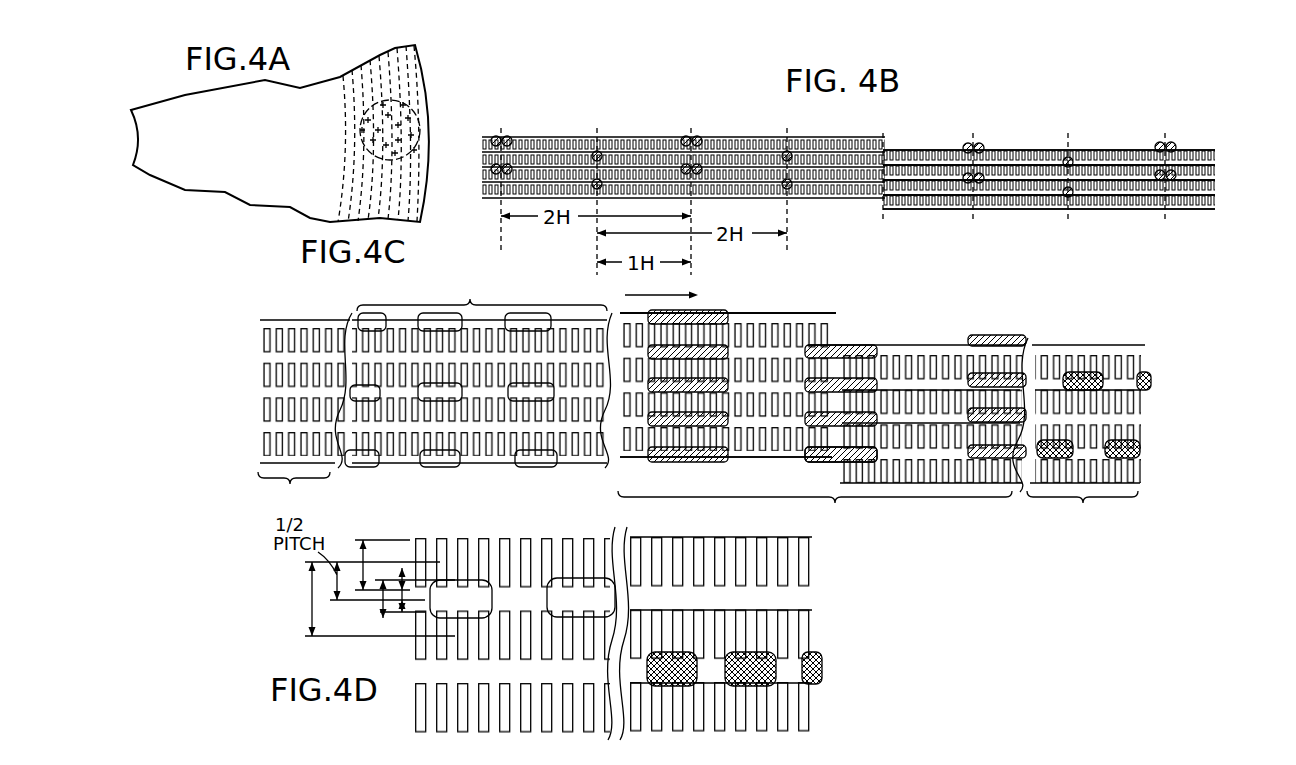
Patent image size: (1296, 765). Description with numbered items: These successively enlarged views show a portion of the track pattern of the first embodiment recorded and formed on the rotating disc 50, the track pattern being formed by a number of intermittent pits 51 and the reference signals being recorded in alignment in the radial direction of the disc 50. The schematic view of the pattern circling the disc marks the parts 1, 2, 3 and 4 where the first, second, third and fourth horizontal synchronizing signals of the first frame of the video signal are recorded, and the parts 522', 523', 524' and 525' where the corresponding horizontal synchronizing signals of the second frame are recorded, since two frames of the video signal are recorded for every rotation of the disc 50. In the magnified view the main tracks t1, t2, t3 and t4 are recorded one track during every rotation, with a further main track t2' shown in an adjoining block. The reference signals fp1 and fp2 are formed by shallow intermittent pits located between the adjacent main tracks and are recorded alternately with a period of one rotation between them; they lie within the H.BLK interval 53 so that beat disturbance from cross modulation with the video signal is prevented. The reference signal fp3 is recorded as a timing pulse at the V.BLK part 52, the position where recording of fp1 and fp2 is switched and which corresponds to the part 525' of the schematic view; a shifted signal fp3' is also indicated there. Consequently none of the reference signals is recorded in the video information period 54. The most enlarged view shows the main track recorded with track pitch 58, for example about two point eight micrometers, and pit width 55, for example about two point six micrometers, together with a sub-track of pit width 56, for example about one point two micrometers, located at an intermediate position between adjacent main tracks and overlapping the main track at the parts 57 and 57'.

In FIG. 4A, the disc 50 is at (424, 72).
In FIG. 4C, the disc 50 is at (1112, 342).
In FIG. 4B, the track 51 is at (834, 200).
In FIG. 4C, the track 51 is at (812, 322).
In FIG. 4D, the track 51 is at (565, 541).
In FIG. 4C, the V.BLK part 52 is at (815, 512).
In FIG. 4C, the H.BLK interval 53 is at (747, 403).
In FIG. 4C, the video information period 54 is at (294, 489).
In FIG. 4D, the pit width 55 is at (363, 565).
In FIG. 4D, the pit width 56 is at (383, 603).
In FIG. 4D, the overlap part 57 is at (415, 559).
In FIG. 4D, the overlap part 57' is at (398, 630).
In FIG. 4D, the track pitch 58 is at (312, 600).
In FIG. 4B, the reference signal fp1 is at (702, 137).
In FIG. 4C, the reference signal fp1 is at (1075, 372).
In FIG. 4D, the reference signal fp1 is at (822, 670).
In FIG. 4B, the reference signal fp2 is at (792, 152).
In FIG. 4C, the reference signal fp2 is at (421, 314).
In FIG. 4D, the reference signal fp2 is at (468, 580).
In FIG. 4C, the reference signal fp3 is at (841, 392).
In FIG. 4C, the third type fault point (shifted) fp3' is at (832, 474).
In FIG. 4B, the first main track t1 is at (892, 142).
In FIG. 4C, the first main track t1 is at (833, 352).
In FIG. 4B, the second main track t2 is at (1076, 170).
In FIG. 4C, the second main track t2 is at (931, 351).
In FIG. 4D, the second main track t2 is at (741, 555).
In FIG. 4C, the second track (adjacent block) t2' is at (1119, 399).
In FIG. 4B, the third main track t3 is at (1226, 186).
In FIG. 4C, the third main track t3 is at (885, 400).
In FIG. 4D, the third main track t3 is at (808, 628).
In FIG. 4B, the fourth track t4 is at (1226, 201).
In FIG. 4C, the fourth track t4 is at (783, 440).
In FIG. 4D, the fourth track t4 is at (808, 703).
In FIG. 4B, the head position 4 is at (498, 175).
In FIG. 4B, the third horizontal synchronizing signal part 3 is at (596, 188).
In FIG. 4B, the second horizontal synchronizing signal part 2 is at (690, 188).
In FIG. 4B, the first horizontal synchronizing signal part 1 is at (786, 175).
In FIG. 4B, the 525th horizontal synchronizing signal part 525' is at (887, 159).
In FIG. 4B, the line position 524' is at (977, 162).
In FIG. 4B, the line position 523' is at (1070, 162).
In FIG. 4B, the 522nd horizontal synchronizing signal part 522' is at (1170, 162).